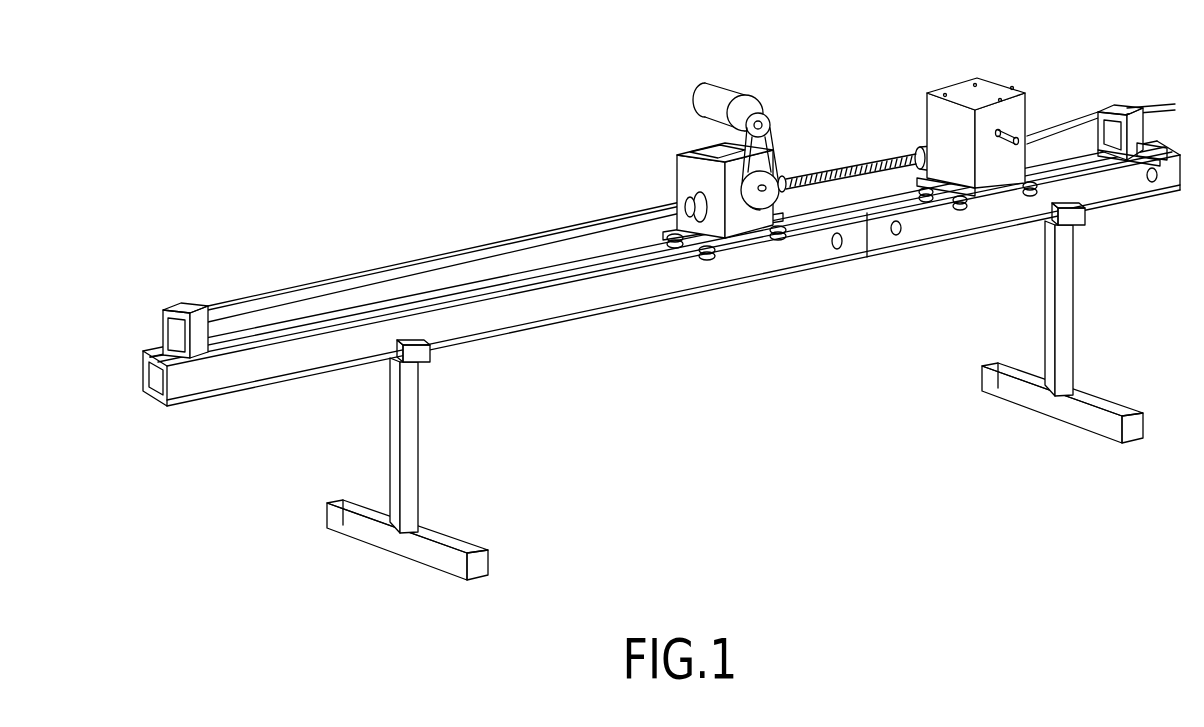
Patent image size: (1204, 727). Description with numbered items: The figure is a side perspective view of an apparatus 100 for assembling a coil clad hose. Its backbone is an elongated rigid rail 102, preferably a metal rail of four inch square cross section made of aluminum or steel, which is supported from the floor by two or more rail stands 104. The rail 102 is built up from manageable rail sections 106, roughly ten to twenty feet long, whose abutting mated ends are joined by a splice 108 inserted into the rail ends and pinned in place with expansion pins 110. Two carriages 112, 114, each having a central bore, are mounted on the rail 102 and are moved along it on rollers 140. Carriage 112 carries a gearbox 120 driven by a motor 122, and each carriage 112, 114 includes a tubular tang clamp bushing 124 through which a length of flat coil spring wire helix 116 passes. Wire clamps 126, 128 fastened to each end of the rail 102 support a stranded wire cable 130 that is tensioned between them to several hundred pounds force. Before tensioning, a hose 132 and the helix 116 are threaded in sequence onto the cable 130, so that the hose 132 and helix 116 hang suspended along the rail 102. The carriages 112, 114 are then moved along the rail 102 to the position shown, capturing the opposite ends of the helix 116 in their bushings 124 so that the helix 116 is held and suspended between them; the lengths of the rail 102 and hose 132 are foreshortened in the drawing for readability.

The apparatus 100 is at (1060, 500).
The rail 102 is at (200, 405).
The rail stands 104 is at (412, 500).
The rail sections 106 is at (1127, 197).
The splice 108 is at (867, 255).
The expansion pins 110 is at (898, 233).
The carriage 112 is at (692, 237).
The carriage 114 is at (975, 88).
The flat coil spring wire helix 116 is at (855, 170).
The gearbox 120 is at (680, 163).
The motor 122 is at (743, 92).
The tang clamp bushing 124 is at (787, 155).
The wire clamp 126 is at (177, 305).
The wire clamp 128 is at (1120, 108).
The stranded wire cable 130 is at (1160, 112).
The hose 132 is at (395, 262).
The rollers 140 is at (710, 255).